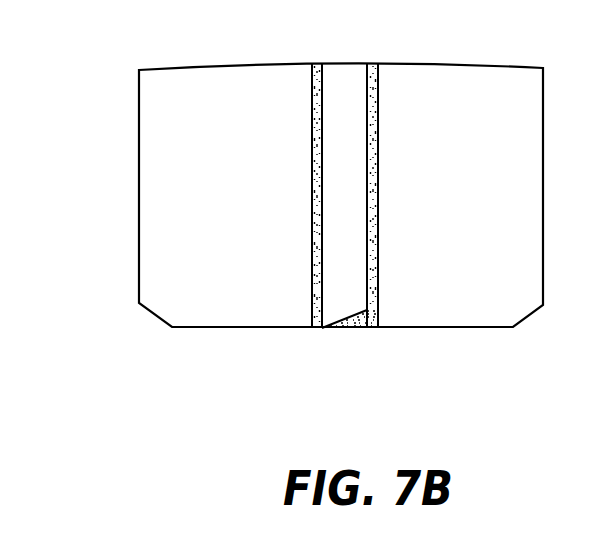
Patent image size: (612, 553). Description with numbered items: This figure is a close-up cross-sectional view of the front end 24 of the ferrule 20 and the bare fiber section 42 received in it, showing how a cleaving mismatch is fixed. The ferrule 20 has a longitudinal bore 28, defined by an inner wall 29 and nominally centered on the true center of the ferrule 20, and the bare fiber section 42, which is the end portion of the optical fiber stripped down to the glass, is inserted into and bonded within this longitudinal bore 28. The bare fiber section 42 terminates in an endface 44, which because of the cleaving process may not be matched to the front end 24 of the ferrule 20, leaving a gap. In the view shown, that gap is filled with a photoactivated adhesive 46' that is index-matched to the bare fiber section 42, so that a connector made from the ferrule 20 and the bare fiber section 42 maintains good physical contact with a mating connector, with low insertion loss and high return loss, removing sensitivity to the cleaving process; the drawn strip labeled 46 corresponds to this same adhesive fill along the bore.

The ferrule 20 is at (285, 213).
The front end 24 is at (193, 330).
The longitudinal bore 28 is at (310, 330).
The inner wall 29 is at (380, 162).
The bare fiber section 42 is at (369, 102).
The endface 44 is at (350, 330).
The first sealing strip 46 is at (272, 170).
The photoactivated adhesive 46' is at (399, 344).